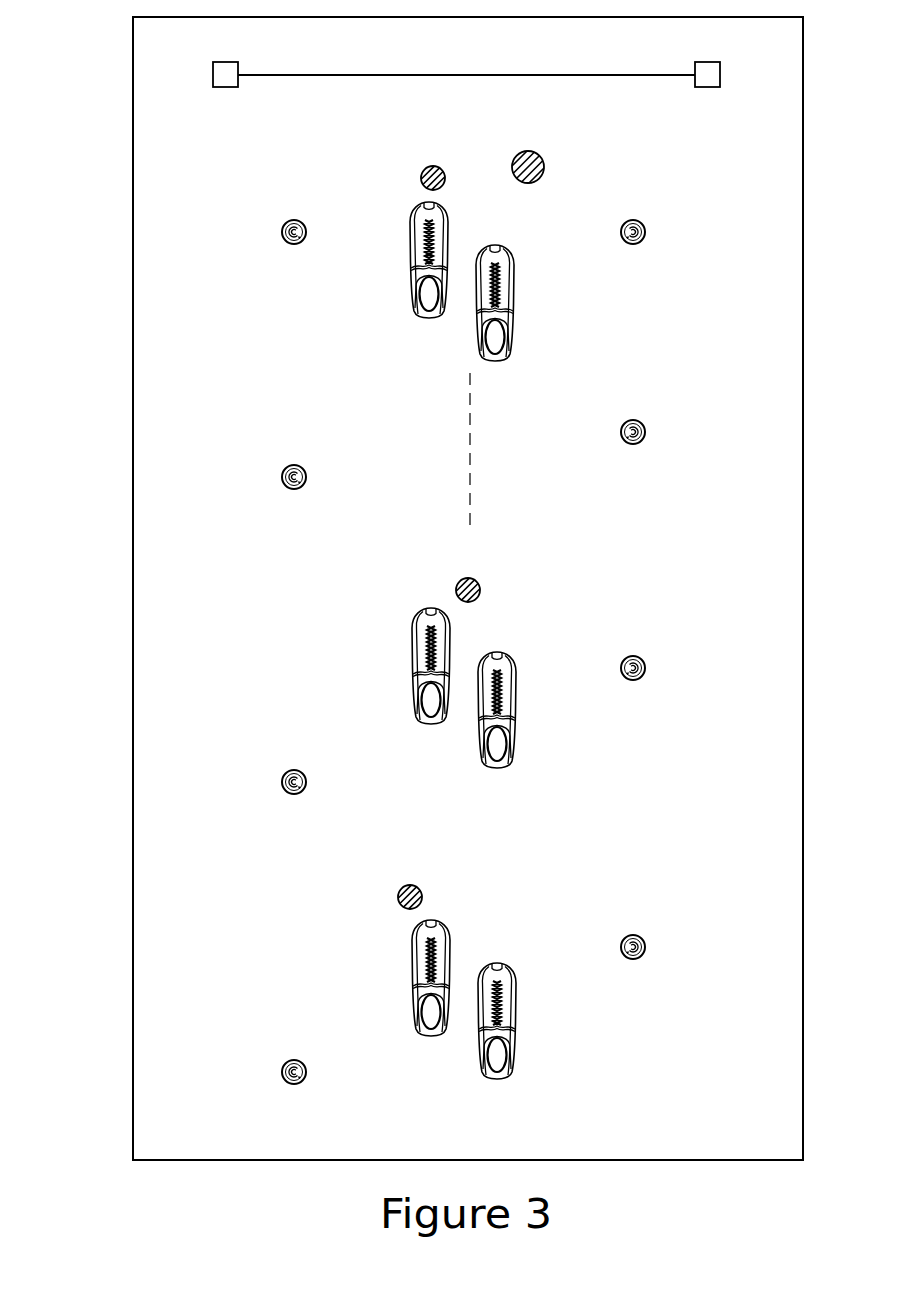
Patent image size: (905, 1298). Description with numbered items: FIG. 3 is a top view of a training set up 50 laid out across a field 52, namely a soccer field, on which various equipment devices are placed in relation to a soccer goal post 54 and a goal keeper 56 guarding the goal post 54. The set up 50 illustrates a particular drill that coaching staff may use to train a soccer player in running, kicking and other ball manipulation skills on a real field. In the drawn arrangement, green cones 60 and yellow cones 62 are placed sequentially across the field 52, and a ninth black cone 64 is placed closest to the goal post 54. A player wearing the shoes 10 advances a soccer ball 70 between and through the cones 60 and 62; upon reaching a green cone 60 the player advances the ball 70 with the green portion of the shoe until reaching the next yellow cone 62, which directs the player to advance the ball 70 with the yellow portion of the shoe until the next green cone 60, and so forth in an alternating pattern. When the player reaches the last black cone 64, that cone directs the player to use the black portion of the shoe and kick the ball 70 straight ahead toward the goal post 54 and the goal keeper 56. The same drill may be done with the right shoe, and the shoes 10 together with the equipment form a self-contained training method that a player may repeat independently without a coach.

The shoes 10 is at (398, 183).
The training set up 50 is at (82, 29).
The field 52 is at (133, 180).
The soccer goal post 54 is at (273, 88).
The goal keeper 56 is at (542, 156).
The green cones 60 is at (282, 477).
The yellow cones 62 is at (645, 230).
The black cone 64 is at (282, 232).
The soccer ball 70 is at (441, 166).